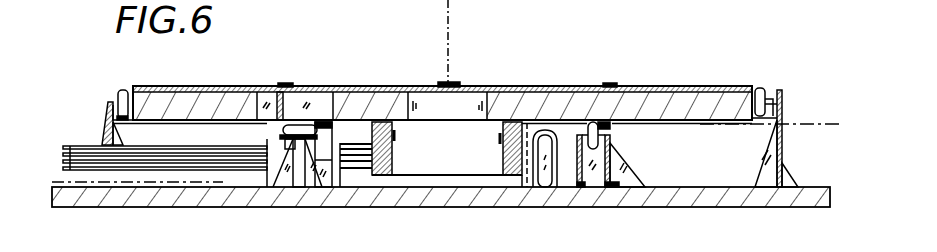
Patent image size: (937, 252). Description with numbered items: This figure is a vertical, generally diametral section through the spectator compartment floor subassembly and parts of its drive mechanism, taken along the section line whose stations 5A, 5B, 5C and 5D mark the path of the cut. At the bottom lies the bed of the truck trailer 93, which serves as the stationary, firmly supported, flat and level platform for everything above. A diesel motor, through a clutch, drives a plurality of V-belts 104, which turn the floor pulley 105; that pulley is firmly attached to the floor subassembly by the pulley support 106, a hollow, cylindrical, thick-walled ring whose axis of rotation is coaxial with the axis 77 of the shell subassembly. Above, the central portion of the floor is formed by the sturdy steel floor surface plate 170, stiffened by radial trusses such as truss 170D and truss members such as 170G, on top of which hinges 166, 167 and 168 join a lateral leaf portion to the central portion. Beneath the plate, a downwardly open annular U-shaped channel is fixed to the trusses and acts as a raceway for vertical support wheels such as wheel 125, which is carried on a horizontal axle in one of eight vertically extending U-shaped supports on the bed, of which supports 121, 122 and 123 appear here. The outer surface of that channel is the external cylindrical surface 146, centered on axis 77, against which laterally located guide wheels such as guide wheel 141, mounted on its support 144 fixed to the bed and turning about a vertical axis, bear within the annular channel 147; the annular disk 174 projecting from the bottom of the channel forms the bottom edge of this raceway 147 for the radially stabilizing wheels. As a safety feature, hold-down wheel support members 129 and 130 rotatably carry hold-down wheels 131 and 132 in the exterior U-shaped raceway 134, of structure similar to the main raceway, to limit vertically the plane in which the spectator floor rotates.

The section line 5A is at (74, 173).
The section line 5B is at (215, 127).
The section line 5C is at (215, 128).
The dimension 5D is at (799, 125).
The axis 77 is at (449, 62).
The bed truck trailer 93 is at (388, 208).
The V-belts 104 is at (88, 147).
The floor pulley 105 is at (515, 175).
The pulley support 106 is at (453, 146).
The U-shaped support 121 is at (620, 188).
The U-shaped support 122 is at (543, 187).
The U-shaped support 123 is at (331, 186).
The wheel 125 is at (614, 143).
The hold-down wheel support member 129 is at (778, 140).
The hold-down wheel support member 130 is at (107, 112).
The hold-down wheel 131 is at (765, 93).
The hold-down wheel 132 is at (125, 89).
The exterior U-shaped raceway 134 is at (775, 121).
The guide wheel 141 is at (304, 91).
The support 144 is at (283, 178).
The external cylindrical surface 146 is at (247, 97).
The annular channel 147 is at (333, 119).
The hinge 166 is at (283, 83).
The hinge 167 is at (458, 83).
The hinge 168 is at (604, 83).
The floor surface plate 170 is at (360, 89).
The radial truss 170D is at (200, 92).
The truss member 170G is at (670, 90).
The annular disk 174 is at (283, 137).